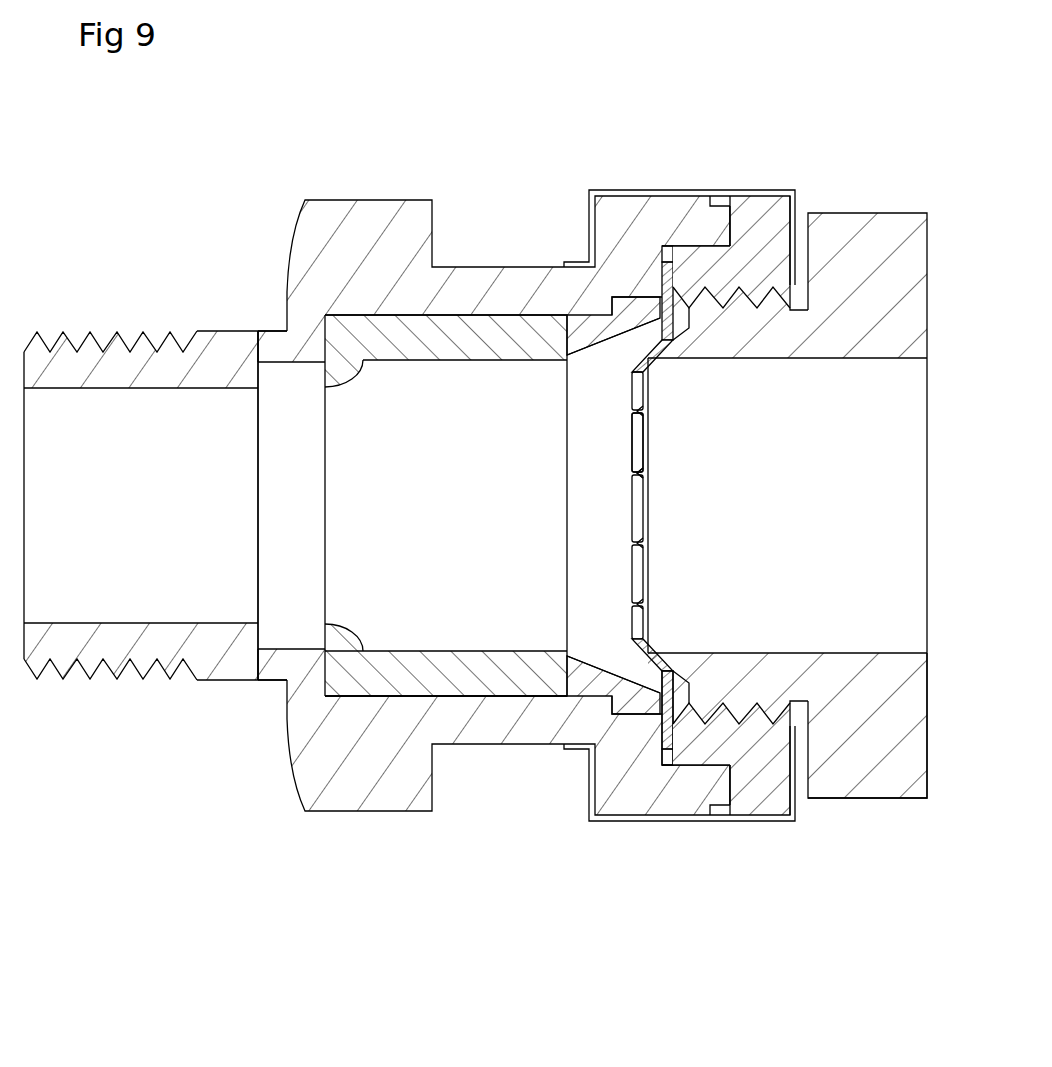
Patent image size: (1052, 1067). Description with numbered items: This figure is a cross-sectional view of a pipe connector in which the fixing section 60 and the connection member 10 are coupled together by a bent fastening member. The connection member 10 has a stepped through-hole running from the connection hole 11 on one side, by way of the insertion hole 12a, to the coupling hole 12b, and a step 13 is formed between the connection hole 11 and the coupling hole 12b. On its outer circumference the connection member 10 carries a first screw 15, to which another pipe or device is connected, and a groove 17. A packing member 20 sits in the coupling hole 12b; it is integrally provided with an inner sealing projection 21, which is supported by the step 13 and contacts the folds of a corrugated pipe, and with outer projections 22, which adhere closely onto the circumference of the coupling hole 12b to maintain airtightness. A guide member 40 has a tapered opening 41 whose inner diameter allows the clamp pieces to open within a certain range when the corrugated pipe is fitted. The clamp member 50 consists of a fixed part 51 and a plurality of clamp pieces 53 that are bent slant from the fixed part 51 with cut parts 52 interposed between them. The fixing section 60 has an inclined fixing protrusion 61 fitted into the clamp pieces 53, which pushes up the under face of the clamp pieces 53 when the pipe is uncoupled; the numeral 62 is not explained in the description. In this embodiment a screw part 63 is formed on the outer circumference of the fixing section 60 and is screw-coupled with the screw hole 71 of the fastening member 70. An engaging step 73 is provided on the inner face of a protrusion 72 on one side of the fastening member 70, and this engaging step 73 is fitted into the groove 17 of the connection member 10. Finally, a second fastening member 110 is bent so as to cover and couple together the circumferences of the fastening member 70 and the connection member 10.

The connection member 10 is at (377, 199).
The connection hole 11 is at (76, 622).
The insertion hole 12a is at (298, 366).
The coupling hole 12b is at (312, 696).
The step 13 is at (271, 372).
The first screw 15 is at (92, 330).
The groove 17 is at (720, 196).
The packing member 20 is at (398, 649).
The sealing projection 21 is at (331, 382).
The outer projections 22 is at (381, 700).
The guide member 40 is at (605, 667).
The tapered opening 41 is at (618, 340).
The clamp member 50 is at (631, 503).
The fixed part 51 is at (663, 764).
The cut parts 52 is at (646, 476).
The clamp pieces 53 is at (650, 437).
The fixing section 60 is at (893, 208).
The inclined fixing protrusion 61 is at (664, 655).
The hexagonal portion of second body 62 is at (856, 800).
The screw part 63 is at (770, 288).
The fastening member 70 is at (768, 793).
The screw hole 71 is at (750, 700).
The protrusion 72 is at (690, 196).
The engaging step 73 is at (733, 200).
The second fastening member 110 is at (596, 188).